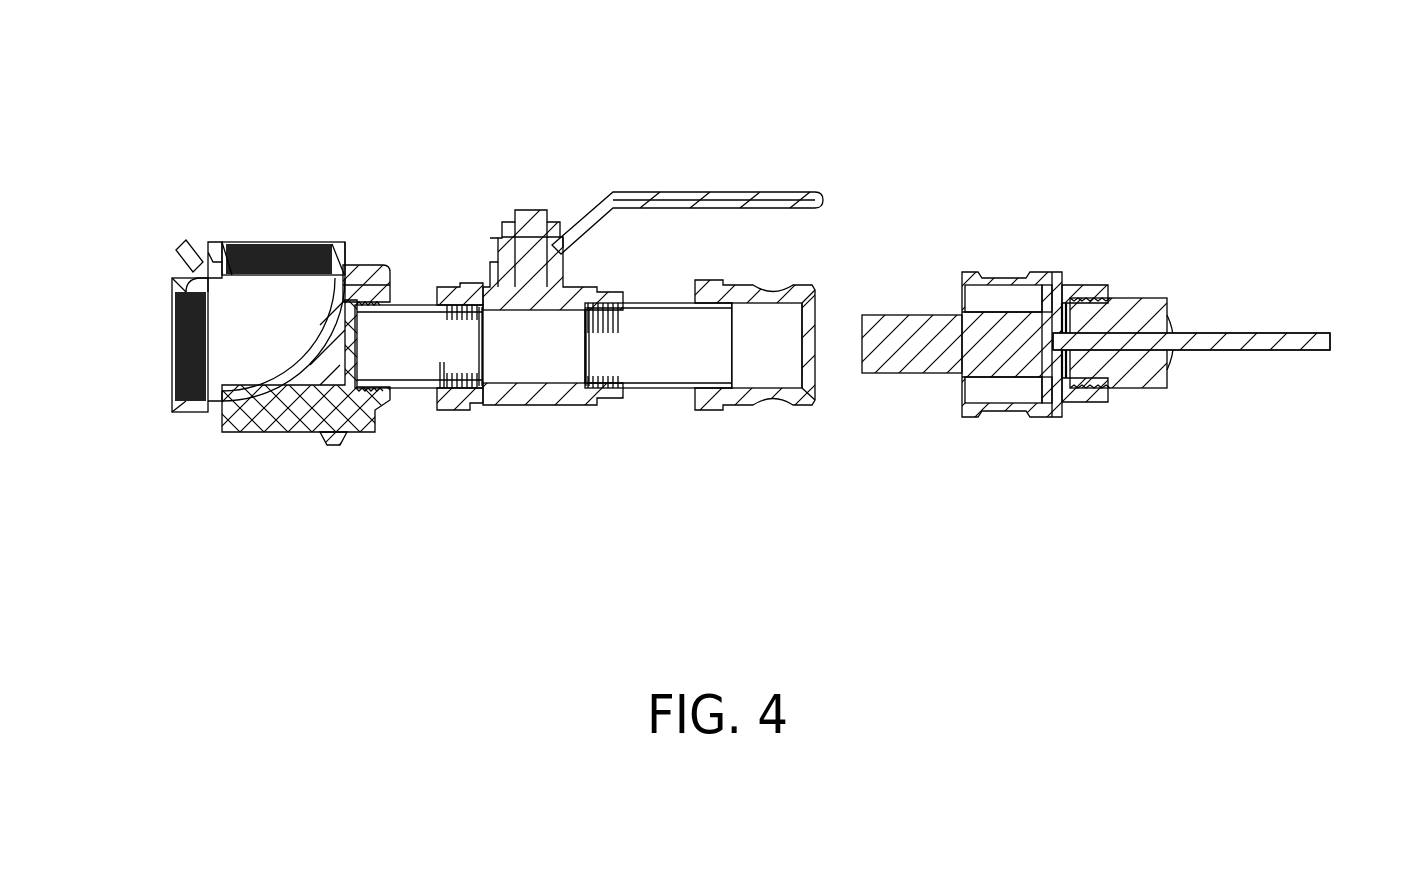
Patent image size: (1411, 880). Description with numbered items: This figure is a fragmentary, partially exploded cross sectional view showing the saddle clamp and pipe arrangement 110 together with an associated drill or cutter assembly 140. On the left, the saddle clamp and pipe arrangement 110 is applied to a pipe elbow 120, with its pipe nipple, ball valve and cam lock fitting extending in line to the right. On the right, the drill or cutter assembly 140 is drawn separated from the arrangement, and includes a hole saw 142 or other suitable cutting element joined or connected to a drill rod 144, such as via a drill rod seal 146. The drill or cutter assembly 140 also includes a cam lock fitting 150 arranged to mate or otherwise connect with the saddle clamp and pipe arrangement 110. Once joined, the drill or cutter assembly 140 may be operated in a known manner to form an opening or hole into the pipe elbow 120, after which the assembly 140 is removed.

The saddle clamp and pipe arrangement 110 is at (442, 197).
The pipe elbow 120 is at (210, 242).
The drill or cutter assembly 140 is at (1115, 174).
The hole saw 142 is at (893, 369).
The drill rod 144 is at (1238, 352).
The drill rod seal 146 is at (1137, 297).
The cam lock fitting 150 is at (1013, 272).